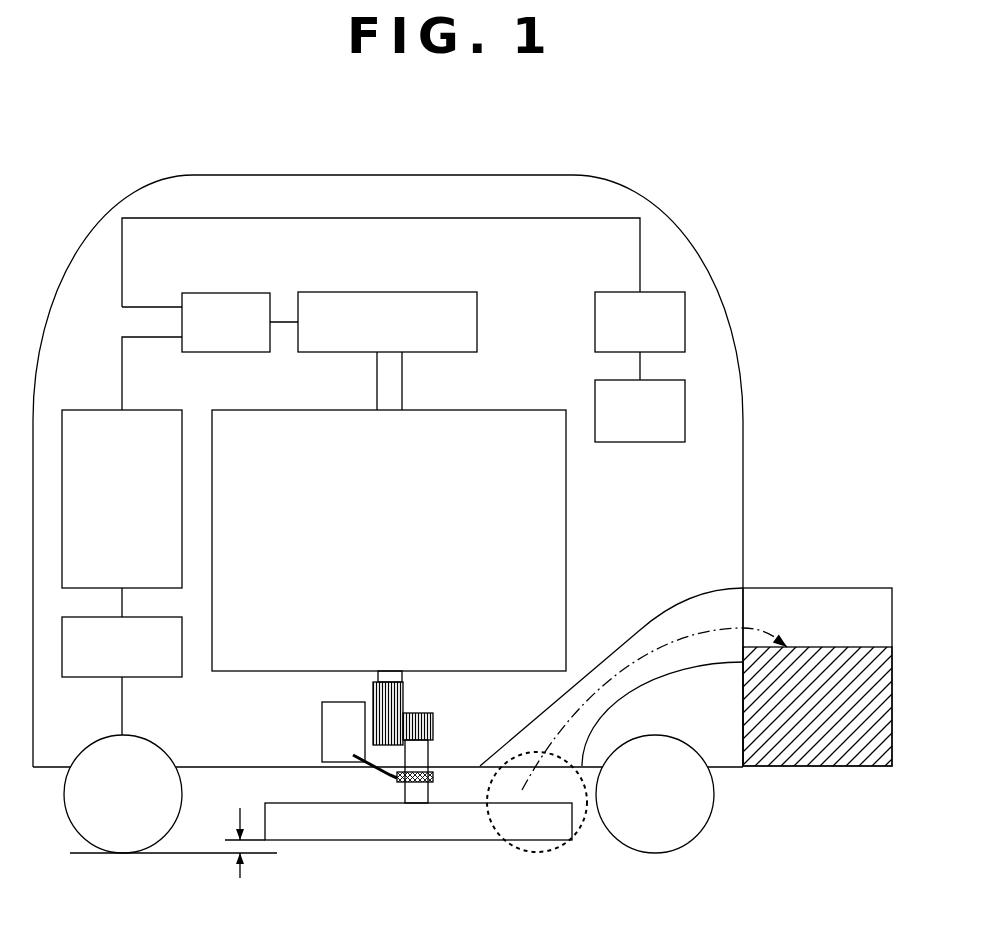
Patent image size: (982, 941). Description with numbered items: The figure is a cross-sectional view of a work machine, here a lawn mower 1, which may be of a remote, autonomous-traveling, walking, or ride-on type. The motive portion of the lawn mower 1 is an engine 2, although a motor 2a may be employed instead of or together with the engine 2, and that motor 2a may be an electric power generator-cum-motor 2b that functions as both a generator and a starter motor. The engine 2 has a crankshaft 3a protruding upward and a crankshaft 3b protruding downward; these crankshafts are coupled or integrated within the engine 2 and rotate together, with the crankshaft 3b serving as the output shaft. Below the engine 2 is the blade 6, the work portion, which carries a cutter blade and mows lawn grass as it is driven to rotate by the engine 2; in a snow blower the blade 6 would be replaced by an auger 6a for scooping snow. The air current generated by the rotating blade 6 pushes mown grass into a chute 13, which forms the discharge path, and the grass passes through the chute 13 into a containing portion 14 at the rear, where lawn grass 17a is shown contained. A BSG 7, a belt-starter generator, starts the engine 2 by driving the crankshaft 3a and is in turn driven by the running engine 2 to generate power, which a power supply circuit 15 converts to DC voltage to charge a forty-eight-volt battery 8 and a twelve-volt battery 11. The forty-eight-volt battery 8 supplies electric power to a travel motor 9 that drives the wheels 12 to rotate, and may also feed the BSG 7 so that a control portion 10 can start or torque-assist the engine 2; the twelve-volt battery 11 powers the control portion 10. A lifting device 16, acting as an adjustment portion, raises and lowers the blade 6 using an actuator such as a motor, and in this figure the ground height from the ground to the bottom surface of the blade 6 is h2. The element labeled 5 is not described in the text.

The lawn mower 1 is at (536, 175).
The engine 2 is at (443, 540).
The motor 2a is at (389, 540).
The electric power generator-cum-motor 2b is at (566, 571).
The crankshaft 3a is at (403, 386).
The crankshaft 3b is at (405, 681).
The lifting actuator 5 is at (433, 742).
The blade 6 is at (376, 841).
The auger 6a is at (560, 842).
The BSG 7 is at (372, 292).
The 48-V battery 8 is at (150, 410).
The travel motor 9 is at (100, 677).
The control portion 10 is at (678, 380).
The 12-V battery 11 is at (650, 292).
The wheels 12 is at (72, 795).
The chute 13 is at (655, 618).
The containing portion 14 is at (817, 683).
The power supply circuit 15 is at (202, 293).
The lifting device 16 is at (322, 738).
The lawn grass 17a is at (827, 767).
The ground height h2 is at (173, 843).